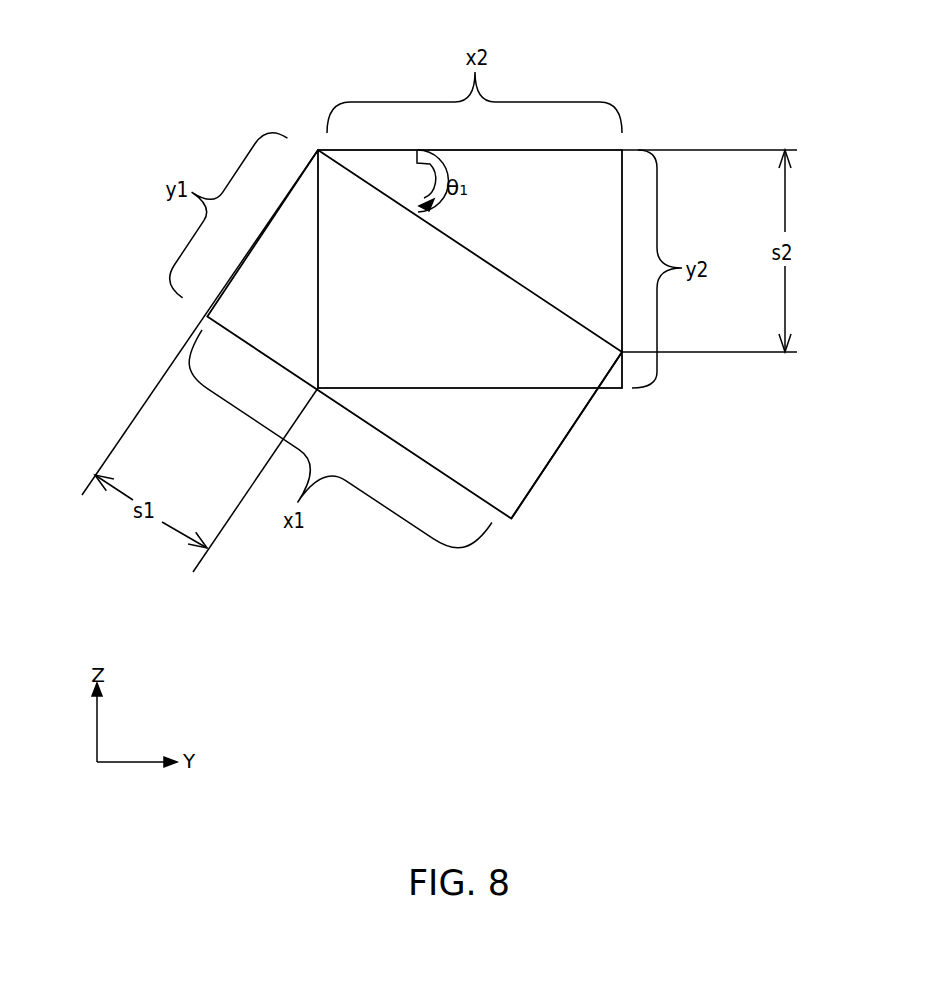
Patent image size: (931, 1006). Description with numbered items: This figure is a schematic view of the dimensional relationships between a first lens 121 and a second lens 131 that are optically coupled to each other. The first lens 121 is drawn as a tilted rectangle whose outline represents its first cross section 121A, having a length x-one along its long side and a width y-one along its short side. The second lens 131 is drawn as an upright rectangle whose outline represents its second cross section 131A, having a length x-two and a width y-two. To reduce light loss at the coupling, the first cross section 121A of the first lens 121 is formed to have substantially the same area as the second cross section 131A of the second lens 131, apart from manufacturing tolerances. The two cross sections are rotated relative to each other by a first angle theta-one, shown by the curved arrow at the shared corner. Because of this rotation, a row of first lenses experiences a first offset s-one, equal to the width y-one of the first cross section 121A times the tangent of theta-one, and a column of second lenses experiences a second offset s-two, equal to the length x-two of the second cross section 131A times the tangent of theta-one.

The second lens 131 is at (593, 177).
The second cross section 131A is at (352, 162).
The first lens 121 is at (528, 498).
The first cross section 121A is at (535, 423).